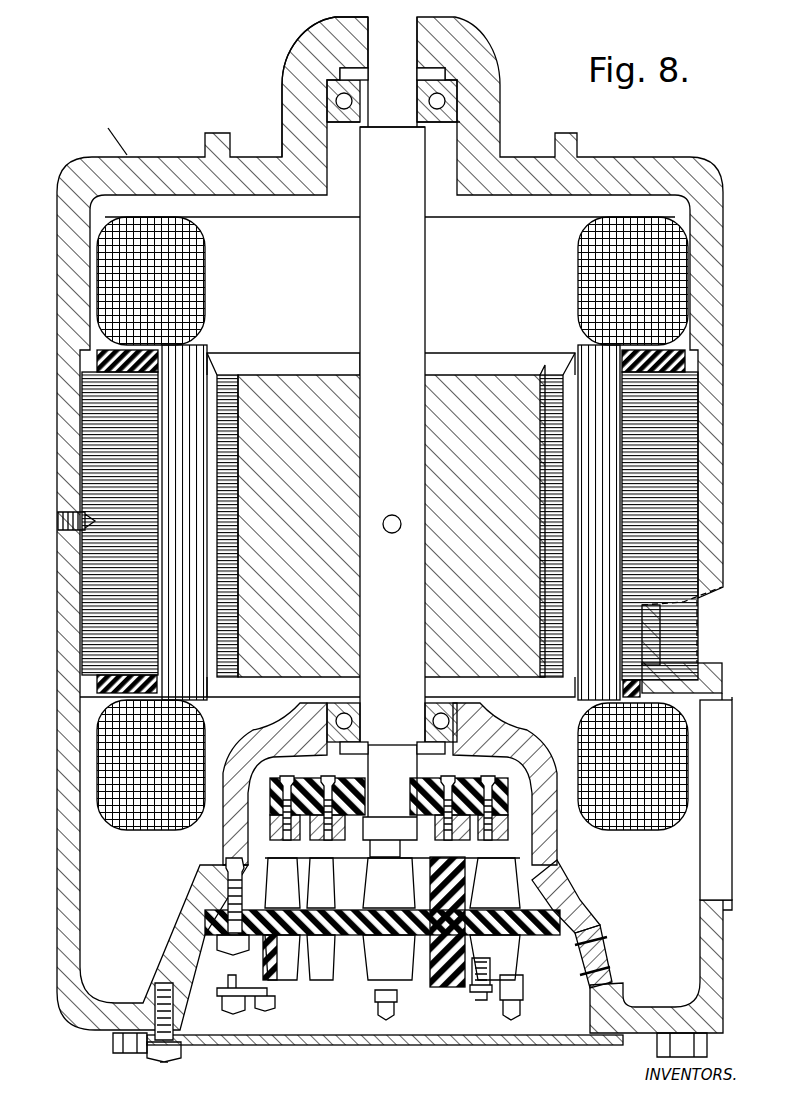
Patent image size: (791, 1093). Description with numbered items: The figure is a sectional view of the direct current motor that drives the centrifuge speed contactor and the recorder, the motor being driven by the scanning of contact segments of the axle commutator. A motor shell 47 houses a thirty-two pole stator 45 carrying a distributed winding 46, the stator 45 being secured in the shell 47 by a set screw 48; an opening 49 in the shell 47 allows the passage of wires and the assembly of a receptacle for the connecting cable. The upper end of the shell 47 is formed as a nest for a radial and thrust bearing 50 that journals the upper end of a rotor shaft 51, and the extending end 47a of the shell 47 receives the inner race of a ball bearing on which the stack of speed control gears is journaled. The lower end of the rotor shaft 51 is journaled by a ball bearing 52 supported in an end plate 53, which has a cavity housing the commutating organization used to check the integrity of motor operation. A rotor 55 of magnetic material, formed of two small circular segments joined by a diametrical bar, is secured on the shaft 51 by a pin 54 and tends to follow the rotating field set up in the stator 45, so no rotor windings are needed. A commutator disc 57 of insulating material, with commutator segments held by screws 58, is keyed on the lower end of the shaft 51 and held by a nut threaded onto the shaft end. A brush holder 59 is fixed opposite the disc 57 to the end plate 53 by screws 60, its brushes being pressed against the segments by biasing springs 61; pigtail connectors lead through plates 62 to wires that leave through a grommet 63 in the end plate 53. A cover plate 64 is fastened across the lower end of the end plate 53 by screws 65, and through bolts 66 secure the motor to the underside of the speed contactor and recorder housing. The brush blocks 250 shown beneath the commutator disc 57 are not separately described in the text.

The stator 45 is at (690, 448).
The distributed winding 46 is at (580, 290).
The motor shell 47 is at (718, 312).
The extending end of motor shell 47a is at (298, 60).
The set screw 48 is at (58, 516).
The opening 49 is at (727, 804).
The radial and thrust bearing 50 is at (455, 96).
The rotor shaft 51 is at (417, 266).
The ball bearing 52 is at (455, 719).
The end plate 53 is at (712, 1007).
The pin 54 is at (395, 512).
The rotor 55 is at (463, 380).
The commutator disc 57 is at (275, 797).
The screws 58 is at (288, 774).
The brush holder 59 is at (522, 936).
The screws 60 is at (222, 941).
The biasing springs 61 is at (461, 990).
The plates 62 is at (437, 988).
The grommet 63 is at (607, 957).
The cover plate 64 is at (250, 1046).
The screws 65 is at (169, 1033).
The through bolts 66 is at (716, 1046).
The brush blocks 250 is at (290, 838).